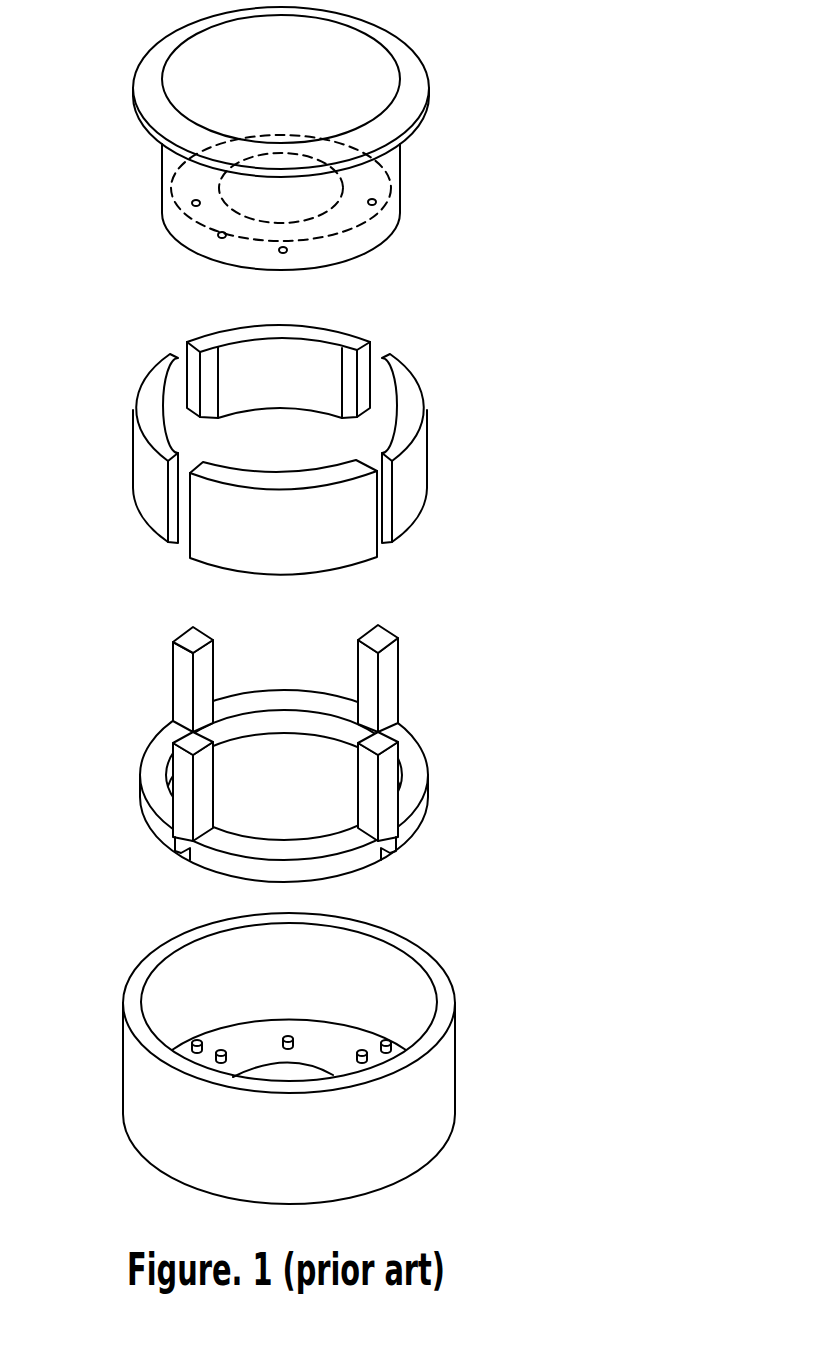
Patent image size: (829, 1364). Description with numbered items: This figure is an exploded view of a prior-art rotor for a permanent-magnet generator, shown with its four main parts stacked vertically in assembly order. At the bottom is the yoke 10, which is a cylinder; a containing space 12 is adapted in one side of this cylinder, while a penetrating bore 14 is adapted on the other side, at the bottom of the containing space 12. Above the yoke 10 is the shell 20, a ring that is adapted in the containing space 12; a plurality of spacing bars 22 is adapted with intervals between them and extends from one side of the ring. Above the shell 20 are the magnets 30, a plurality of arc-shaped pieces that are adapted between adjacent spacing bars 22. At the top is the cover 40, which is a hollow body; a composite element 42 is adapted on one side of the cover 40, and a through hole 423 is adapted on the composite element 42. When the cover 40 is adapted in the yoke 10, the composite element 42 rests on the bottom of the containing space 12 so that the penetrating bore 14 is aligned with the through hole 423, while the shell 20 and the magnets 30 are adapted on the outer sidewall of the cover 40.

The yoke 10 is at (435, 1092).
The containing space 12 is at (310, 985).
The penetrating bore 14 is at (292, 1075).
The shell 20 is at (412, 777).
The spacing bars 22 is at (182, 687).
The magnets 30 is at (293, 335).
The cover 40 is at (420, 85).
The composite element 42 is at (357, 230).
The through hole 423 is at (288, 203).